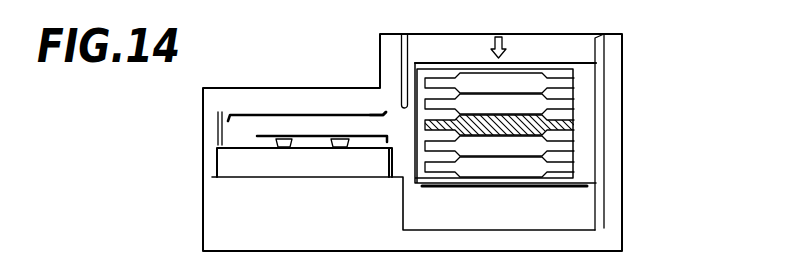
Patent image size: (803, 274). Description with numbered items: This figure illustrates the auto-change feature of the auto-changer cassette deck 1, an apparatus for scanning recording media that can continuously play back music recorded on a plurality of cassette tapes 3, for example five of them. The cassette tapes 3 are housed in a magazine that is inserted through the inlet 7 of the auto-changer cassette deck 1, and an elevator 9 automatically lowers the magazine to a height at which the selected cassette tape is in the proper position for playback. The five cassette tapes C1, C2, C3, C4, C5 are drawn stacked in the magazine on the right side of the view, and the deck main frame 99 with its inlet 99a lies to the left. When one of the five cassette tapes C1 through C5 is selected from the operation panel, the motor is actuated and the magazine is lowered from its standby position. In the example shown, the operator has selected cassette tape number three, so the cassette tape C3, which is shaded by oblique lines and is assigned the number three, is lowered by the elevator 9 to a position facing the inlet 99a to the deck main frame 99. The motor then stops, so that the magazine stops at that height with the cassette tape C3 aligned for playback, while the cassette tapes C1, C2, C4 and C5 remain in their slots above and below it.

The auto-changer cassette deck 1 is at (373, 56).
The cassette tape 3 is at (713, 168).
The inlet 7 is at (545, 63).
The elevator 9 is at (577, 230).
The deck main frame 99 is at (290, 113).
The inlet to the deck main frame 99a is at (395, 120).
The cassette tape C1 is at (568, 165).
The cassette tape C2 is at (568, 147).
The cassette tape C3 is at (570, 127).
The cassette tape C4 is at (568, 103).
The cassette tape C5 is at (570, 80).